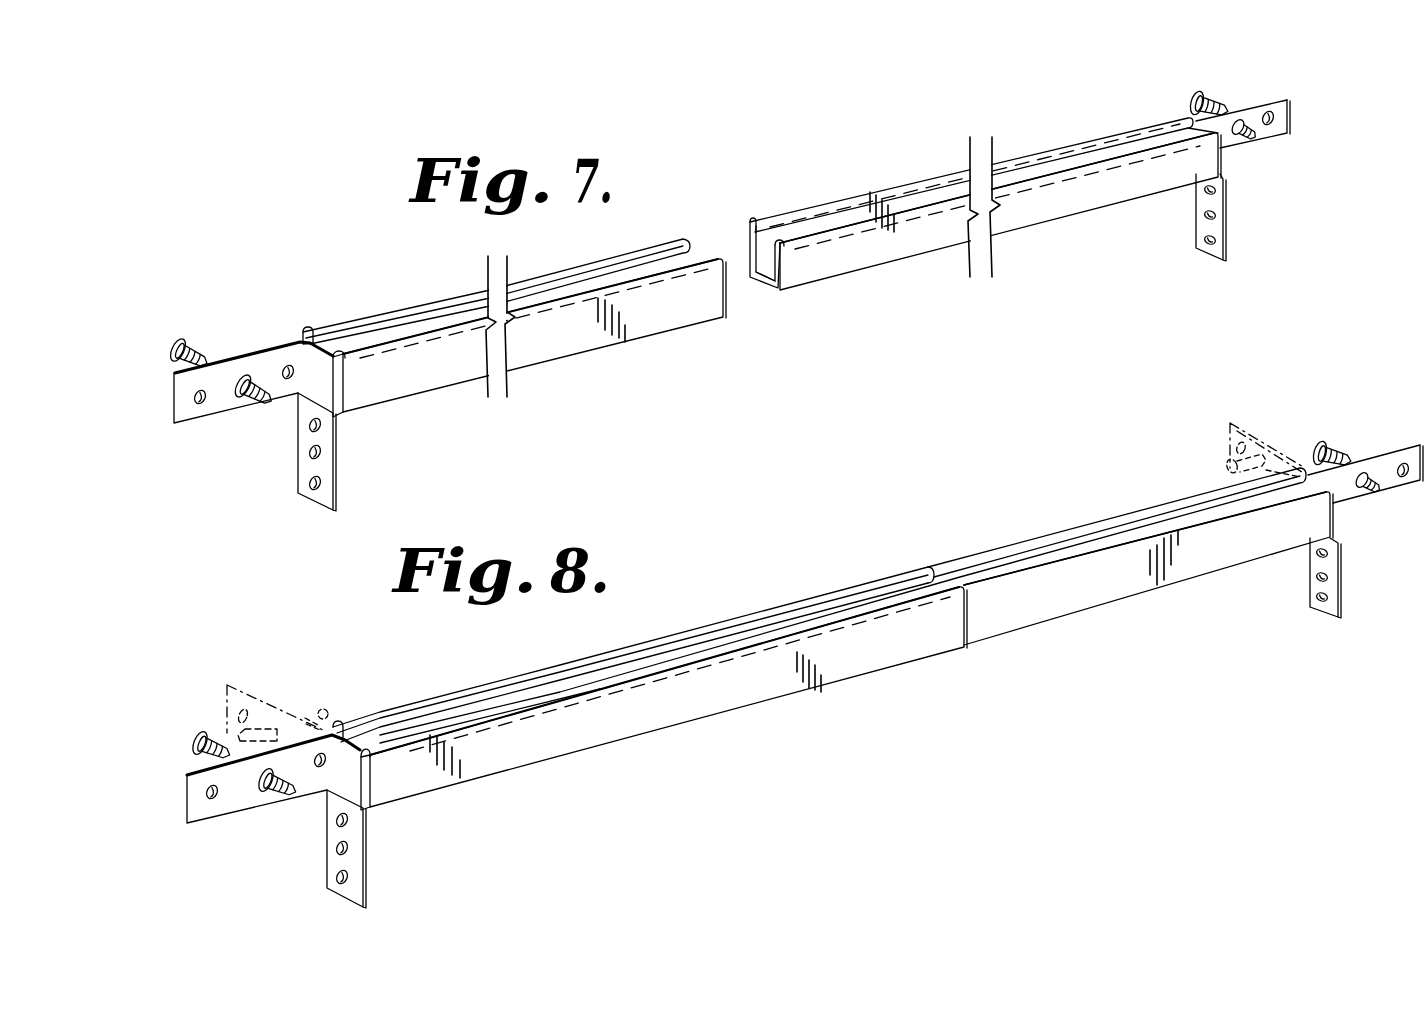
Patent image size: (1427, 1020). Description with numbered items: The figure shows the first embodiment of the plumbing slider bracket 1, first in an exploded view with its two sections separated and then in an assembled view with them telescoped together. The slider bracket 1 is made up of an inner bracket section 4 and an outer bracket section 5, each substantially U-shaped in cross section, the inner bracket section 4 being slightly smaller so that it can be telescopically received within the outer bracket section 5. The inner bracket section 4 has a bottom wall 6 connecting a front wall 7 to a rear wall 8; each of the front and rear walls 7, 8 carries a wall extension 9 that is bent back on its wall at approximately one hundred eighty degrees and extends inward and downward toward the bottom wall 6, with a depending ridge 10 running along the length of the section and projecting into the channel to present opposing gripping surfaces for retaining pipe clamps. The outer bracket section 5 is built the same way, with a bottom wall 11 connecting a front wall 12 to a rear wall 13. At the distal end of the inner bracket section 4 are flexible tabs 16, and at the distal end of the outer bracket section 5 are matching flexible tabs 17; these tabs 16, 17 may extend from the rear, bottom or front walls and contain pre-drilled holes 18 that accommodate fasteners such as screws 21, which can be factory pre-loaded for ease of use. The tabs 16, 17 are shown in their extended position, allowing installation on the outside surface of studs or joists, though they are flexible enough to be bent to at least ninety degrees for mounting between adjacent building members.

In FIG. 7, the plumbing slider bracket 1 is at (803, 309).
In FIG. 8, the plumbing slider bracket 1 is at (714, 591).
In FIG. 7, the inner bracket section 4 is at (935, 276).
In FIG. 8, the inner bracket section 4 is at (1066, 642).
In FIG. 7, the outer bracket section 5 is at (563, 372).
In FIG. 8, the outer bracket section 5 is at (714, 733).
In FIG. 7, the bottom wall 6 is at (770, 272).
In FIG. 7, the front wall 7 is at (847, 262).
In FIG. 7, the rear wall 8 is at (762, 252).
In FIG. 7, the wall extension 9 is at (807, 220).
In FIG. 7, the depending ridge 10 is at (857, 217).
In FIG. 7, the bottom wall 11 is at (327, 392).
In FIG. 7, the front wall 12 is at (383, 393).
In FIG. 7, the rear wall 13 is at (672, 262).
In FIG. 7, the flexible tab 16 is at (1250, 108).
In FIG. 8, the flexible tab 16 is at (1265, 432).
In FIG. 7, the flexible tab 17 is at (252, 362).
In FIG. 8, the flexible tab 17 is at (327, 863).
In FIG. 7, the pre-drilled hole 18 is at (199, 405).
In FIG. 8, the pre-drilled hole 18 is at (207, 800).
In FIG. 7, the screw 21 is at (193, 342).
In FIG. 8, the screw 21 is at (203, 732).